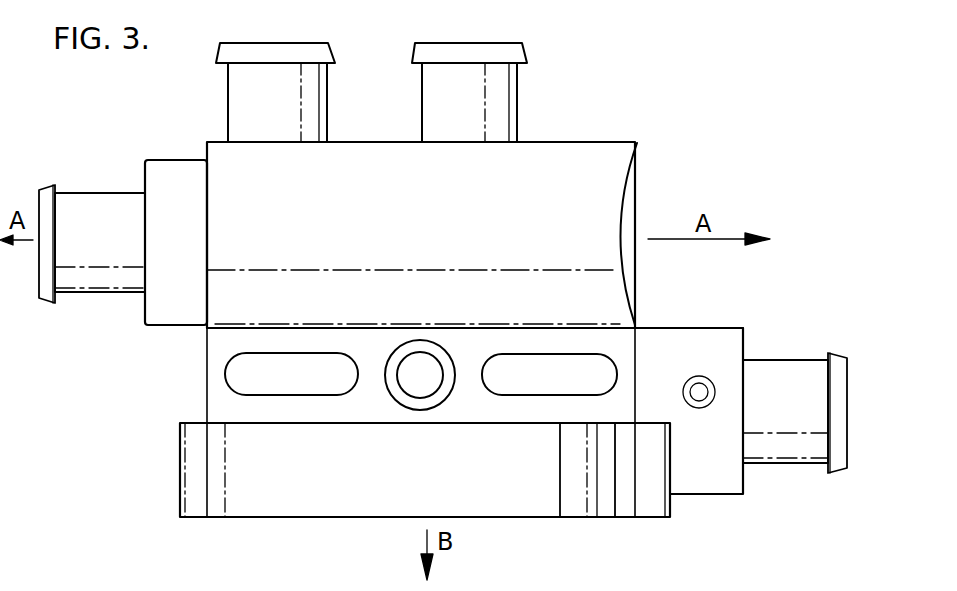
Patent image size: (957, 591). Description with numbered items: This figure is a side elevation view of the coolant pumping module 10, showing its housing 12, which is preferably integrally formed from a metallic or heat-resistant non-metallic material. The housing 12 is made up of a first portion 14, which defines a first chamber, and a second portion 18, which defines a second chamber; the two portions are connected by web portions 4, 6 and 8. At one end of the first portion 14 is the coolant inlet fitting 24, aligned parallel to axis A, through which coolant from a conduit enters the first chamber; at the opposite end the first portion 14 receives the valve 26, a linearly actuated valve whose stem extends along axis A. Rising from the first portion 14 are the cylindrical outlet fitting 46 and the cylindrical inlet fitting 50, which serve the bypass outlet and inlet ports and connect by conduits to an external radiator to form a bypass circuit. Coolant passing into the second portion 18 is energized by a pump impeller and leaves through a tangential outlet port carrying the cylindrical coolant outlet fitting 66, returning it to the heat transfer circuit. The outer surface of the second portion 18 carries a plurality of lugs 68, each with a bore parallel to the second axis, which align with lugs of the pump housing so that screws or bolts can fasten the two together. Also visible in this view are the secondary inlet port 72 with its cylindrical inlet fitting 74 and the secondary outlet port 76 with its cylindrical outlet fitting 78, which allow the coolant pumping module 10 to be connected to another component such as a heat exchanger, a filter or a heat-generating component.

The coolant pumping module 10 is at (174, 371).
The web portion 4 is at (217, 372).
The web portion 6 is at (373, 373).
The web portion 8 is at (628, 367).
The housing 12 is at (745, 330).
The first portion 14 is at (595, 160).
The second portion 18 is at (508, 498).
The coolant inlet fitting 24 is at (96, 197).
The valve 26 is at (636, 198).
The cylindrical outlet fitting 46 is at (232, 103).
The cylindrical inlet fitting 50 is at (517, 101).
The cylindrical coolant outlet fitting 66 is at (783, 465).
The lugs 68 is at (188, 483).
The secondary inlet port 72 is at (412, 382).
The cylindrical inlet fitting 74 is at (443, 350).
The secondary outlet port 76 is at (700, 397).
The cylindrical outlet fitting 78 is at (693, 374).